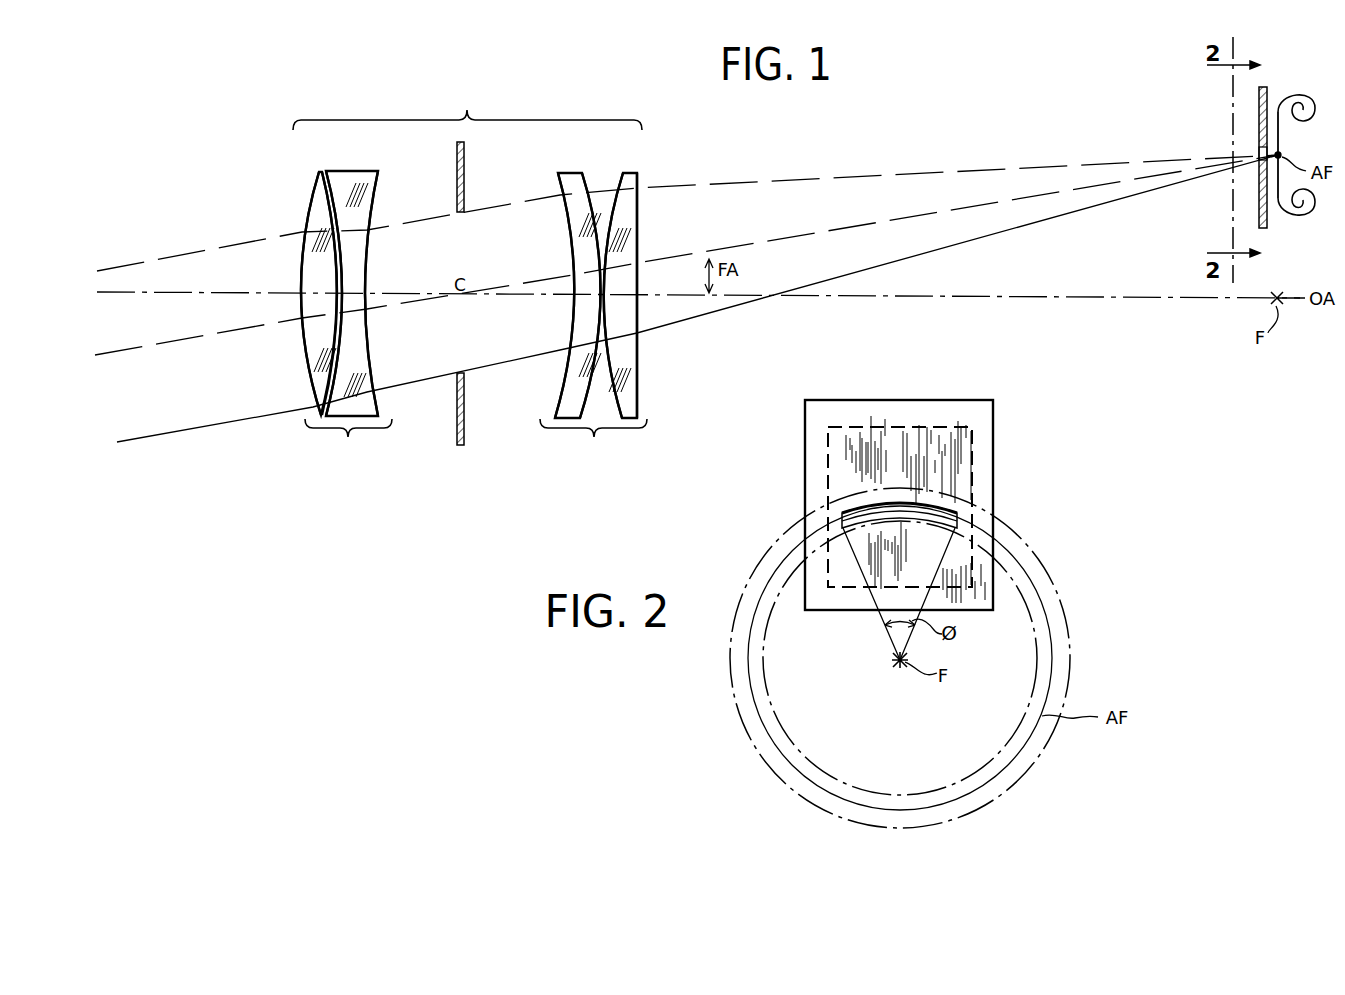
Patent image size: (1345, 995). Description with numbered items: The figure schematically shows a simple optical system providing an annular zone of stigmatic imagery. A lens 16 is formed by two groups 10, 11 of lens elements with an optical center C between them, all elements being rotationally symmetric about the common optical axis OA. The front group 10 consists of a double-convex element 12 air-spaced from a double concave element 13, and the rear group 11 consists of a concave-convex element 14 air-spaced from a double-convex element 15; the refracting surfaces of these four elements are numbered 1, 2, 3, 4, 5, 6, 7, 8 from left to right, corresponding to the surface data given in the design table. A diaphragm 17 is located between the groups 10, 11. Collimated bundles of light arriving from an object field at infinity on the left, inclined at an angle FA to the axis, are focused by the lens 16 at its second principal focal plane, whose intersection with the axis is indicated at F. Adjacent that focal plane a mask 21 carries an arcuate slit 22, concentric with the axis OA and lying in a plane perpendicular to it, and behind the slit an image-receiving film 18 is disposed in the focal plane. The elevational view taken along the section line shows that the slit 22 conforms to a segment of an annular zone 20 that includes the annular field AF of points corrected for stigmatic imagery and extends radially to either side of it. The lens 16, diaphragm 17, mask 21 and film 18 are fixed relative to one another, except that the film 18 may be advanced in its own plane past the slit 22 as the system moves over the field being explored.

In FIG. 1, the first lens surface 1 is at (303, 293).
In FIG. 1, the second lens surface 2 is at (329, 293).
In FIG. 1, the third lens surface 3 is at (341, 293).
In FIG. 1, the fourth lens surface 4 is at (372, 293).
In FIG. 1, the fifth lens surface 5 is at (564, 295).
In FIG. 1, the sixth lens surface 6 is at (590, 295).
In FIG. 1, the seventh lens surface 7 is at (613, 295).
In FIG. 1, the eighth lens surface 8 is at (644, 295).
In FIG. 1, the first lens group 10 is at (358, 462).
In FIG. 1, the second lens group 11 is at (584, 465).
In FIG. 1, the double-convex element 12 is at (305, 347).
In FIG. 1, the double concave element 13 is at (367, 343).
In FIG. 1, the concave-convex element 14 is at (567, 377).
In FIG. 1, the double-convex element 15 is at (638, 383).
In FIG. 1, the lens 16 is at (480, 100).
In FIG. 1, the diaphragm 17 is at (464, 180).
In FIG. 1, the film 18 is at (1280, 130).
In FIG. 2, the film 18 is at (905, 427).
In FIG. 2, the annular zone 20 is at (1030, 632).
In FIG. 1, the mask 21 is at (1268, 218).
In FIG. 2, the mask 21 is at (985, 421).
In FIG. 1, the slit 22 is at (1262, 158).
In FIG. 2, the slit 22 is at (870, 510).